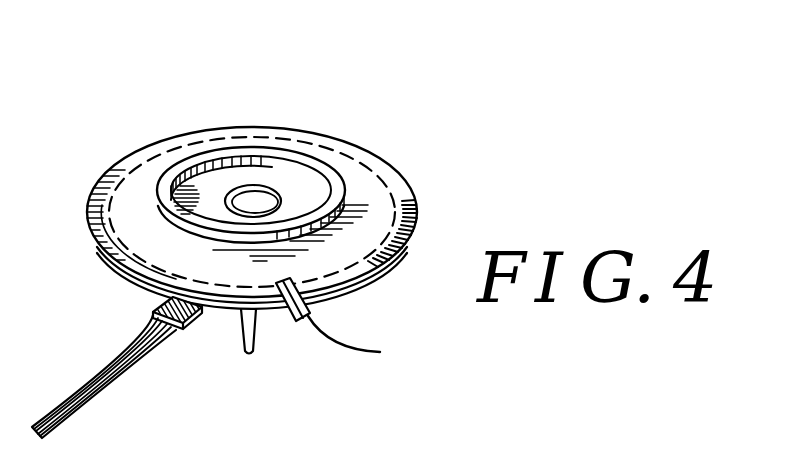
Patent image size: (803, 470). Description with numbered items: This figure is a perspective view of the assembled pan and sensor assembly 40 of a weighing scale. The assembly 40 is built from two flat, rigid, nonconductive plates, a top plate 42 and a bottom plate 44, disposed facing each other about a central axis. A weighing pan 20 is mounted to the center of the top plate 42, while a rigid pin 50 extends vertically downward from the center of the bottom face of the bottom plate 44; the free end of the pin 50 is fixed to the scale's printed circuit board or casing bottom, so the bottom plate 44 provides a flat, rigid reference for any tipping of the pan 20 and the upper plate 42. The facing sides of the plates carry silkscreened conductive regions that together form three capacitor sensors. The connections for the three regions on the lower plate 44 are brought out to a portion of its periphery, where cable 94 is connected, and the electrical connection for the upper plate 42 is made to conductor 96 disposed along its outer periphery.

The pan and sensor assembly 40 is at (110, 158).
The weighing pan 20 is at (293, 184).
The top plate 42 is at (397, 171).
The bottom plate 44 is at (422, 218).
The pin 50 is at (255, 335).
The conductor 96 is at (338, 345).
The cable 94 is at (143, 356).